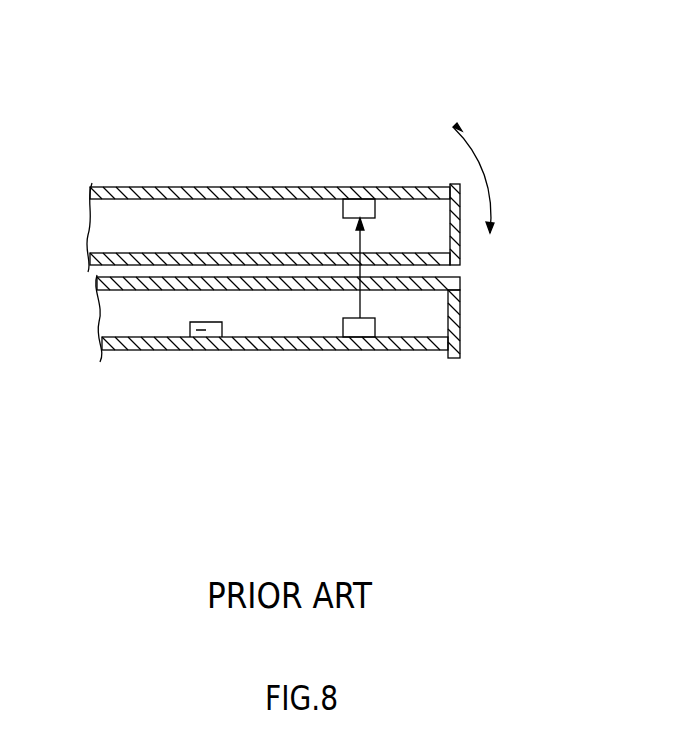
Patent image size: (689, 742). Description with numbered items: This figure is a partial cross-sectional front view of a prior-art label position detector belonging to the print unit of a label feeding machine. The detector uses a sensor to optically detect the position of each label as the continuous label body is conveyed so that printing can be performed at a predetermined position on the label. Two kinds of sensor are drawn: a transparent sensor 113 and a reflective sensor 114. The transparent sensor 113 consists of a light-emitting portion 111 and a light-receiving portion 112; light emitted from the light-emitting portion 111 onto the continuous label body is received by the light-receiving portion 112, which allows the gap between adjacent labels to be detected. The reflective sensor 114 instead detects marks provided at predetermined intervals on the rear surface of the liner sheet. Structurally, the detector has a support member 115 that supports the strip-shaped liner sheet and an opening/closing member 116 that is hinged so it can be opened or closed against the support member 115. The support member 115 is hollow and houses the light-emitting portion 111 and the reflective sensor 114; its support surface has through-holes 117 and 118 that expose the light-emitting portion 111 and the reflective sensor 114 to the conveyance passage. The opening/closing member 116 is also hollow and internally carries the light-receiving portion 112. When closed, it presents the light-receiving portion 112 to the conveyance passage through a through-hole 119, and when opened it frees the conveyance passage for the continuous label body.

The light-emitting portion 111 is at (343, 322).
The light-receiving portion 112 is at (343, 212).
The transparent sensor 113 is at (381, 155).
The reflective sensor 114 is at (183, 349).
The support member 115 is at (460, 317).
The opening/closing member 116 is at (157, 187).
The through-hole 117 is at (180, 291).
The through-hole 118 is at (437, 117).
The through-hole 119 is at (474, 159).